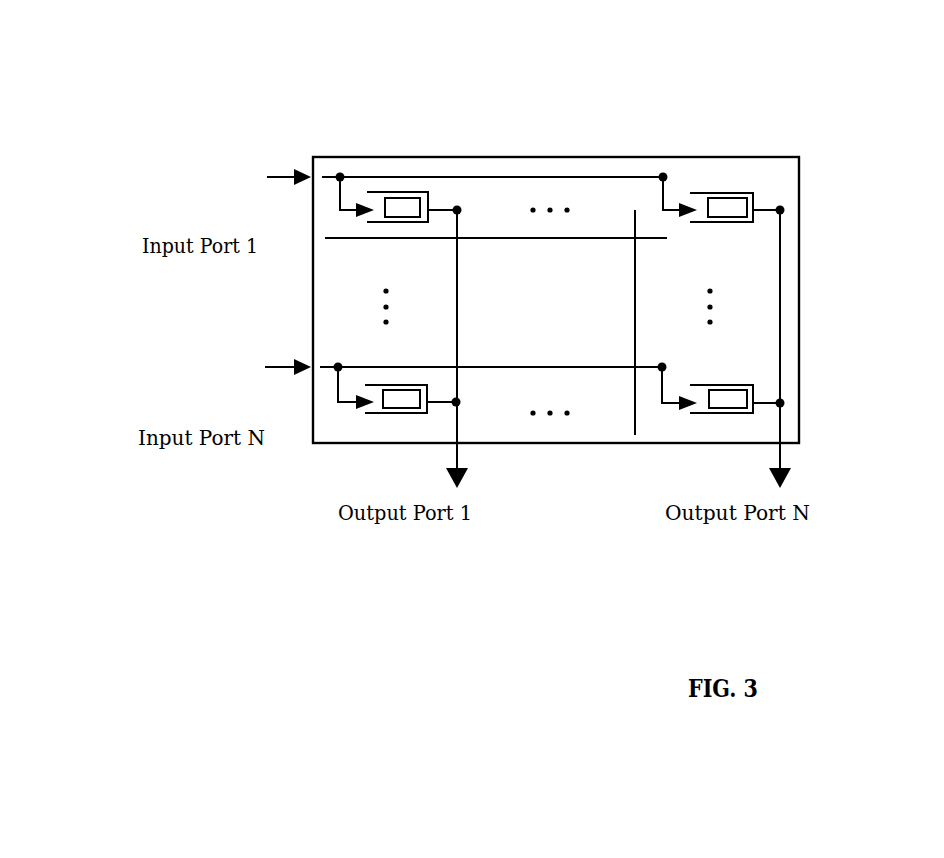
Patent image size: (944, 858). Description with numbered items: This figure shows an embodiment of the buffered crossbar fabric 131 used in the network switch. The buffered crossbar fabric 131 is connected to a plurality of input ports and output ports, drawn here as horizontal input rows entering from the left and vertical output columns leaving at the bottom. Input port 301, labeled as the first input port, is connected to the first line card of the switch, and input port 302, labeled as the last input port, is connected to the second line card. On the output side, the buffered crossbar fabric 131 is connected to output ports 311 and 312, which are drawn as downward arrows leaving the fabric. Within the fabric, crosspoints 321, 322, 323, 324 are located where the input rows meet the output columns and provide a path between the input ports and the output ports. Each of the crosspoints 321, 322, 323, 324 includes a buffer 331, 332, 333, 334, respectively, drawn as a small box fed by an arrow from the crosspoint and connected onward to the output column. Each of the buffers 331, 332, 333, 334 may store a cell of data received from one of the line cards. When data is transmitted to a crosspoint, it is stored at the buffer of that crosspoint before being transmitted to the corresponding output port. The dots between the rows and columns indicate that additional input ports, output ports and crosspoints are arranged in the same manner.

The buffered crossbar fabric 131 is at (110, 93).
The input port 301 is at (277, 176).
The input port 302 is at (273, 371).
The output port 311 is at (458, 455).
The output port 312 is at (782, 452).
The crosspoint 321 is at (342, 174).
The crosspoint 322 is at (666, 175).
The crosspoint 323 is at (337, 365).
The crosspoint 324 is at (664, 366).
The buffer 331 is at (429, 204).
The buffer 332 is at (754, 203).
The buffer 333 is at (373, 413).
The buffer 334 is at (754, 385).